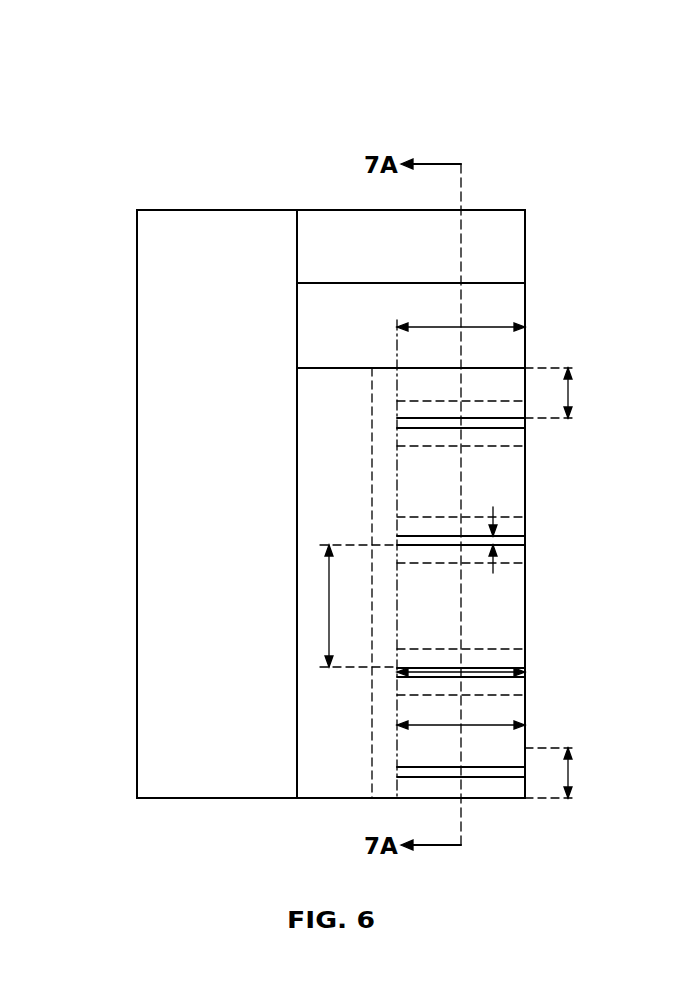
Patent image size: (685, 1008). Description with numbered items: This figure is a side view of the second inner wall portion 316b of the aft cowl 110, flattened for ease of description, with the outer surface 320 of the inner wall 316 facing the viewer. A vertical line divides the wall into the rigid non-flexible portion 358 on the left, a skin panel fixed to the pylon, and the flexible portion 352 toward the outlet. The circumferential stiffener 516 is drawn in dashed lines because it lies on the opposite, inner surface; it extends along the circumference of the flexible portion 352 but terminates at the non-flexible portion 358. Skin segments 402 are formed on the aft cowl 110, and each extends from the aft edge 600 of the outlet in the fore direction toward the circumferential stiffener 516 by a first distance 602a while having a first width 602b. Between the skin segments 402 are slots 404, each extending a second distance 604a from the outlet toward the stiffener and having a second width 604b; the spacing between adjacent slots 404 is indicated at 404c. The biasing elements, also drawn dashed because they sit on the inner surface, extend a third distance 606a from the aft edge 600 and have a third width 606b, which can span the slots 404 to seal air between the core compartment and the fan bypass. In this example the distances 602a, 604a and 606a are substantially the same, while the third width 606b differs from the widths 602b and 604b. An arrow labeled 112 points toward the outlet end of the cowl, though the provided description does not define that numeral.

The second inner wall portion 316b is at (124, 128).
The non-flexible portion 358 is at (318, 237).
The inner wall 316 is at (157, 305).
The skin segments 402 is at (483, 305).
The first distance 602a is at (485, 324).
The first width 602b is at (573, 390).
The flexible portion 352 is at (582, 433).
The transducer region 112 is at (552, 474).
The aft edge 600 is at (525, 505).
The second width 604b is at (493, 562).
The second distance 604a is at (493, 672).
The third distance 606a is at (493, 725).
The third width 606b is at (575, 773).
The circumferential stiffener 516 is at (372, 463).
The slots 404 is at (422, 517).
The electrode segment length 404c is at (330, 610).
The outer surface 320 is at (318, 708).
The aft cowl 110 is at (338, 776).